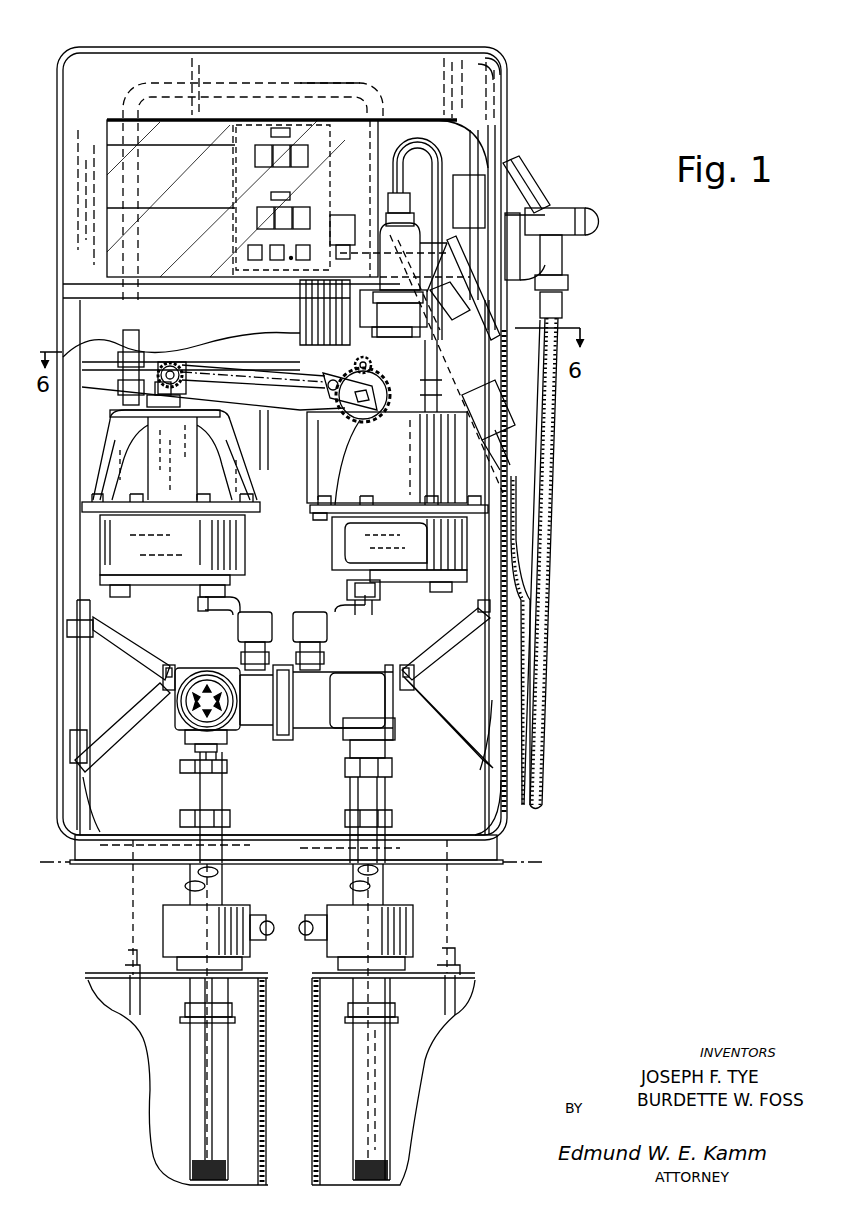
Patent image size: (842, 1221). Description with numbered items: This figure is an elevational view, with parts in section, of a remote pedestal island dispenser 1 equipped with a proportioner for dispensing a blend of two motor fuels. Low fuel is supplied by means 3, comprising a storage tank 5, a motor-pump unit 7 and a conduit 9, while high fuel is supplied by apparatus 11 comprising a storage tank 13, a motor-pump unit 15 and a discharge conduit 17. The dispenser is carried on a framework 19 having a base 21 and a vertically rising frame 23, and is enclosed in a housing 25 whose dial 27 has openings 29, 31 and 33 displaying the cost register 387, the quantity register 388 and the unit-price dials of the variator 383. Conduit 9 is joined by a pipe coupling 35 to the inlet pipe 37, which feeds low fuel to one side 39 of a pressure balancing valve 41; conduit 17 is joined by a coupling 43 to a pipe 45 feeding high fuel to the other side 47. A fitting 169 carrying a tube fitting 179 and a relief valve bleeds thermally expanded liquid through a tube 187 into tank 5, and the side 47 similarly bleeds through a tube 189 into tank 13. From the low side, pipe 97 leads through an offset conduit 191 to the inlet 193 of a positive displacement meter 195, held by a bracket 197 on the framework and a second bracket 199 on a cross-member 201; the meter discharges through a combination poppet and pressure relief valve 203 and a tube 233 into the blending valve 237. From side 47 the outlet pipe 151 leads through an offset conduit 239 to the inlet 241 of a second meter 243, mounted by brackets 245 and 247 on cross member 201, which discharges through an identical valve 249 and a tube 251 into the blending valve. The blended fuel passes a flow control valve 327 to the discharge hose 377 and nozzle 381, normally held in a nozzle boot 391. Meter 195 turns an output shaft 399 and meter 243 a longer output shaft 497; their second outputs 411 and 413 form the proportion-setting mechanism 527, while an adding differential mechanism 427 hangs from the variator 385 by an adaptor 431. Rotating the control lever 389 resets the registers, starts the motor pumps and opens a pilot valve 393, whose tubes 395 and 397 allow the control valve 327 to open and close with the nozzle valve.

The island dispenser 1 is at (510, 66).
The low fuel supply means 3 is at (82, 968).
The storage tank 5 is at (165, 1150).
The motor-pump unit 7 is at (196, 1085).
The conduit 9 is at (228, 890).
The high fuel supply apparatus 11 is at (482, 1013).
The storage tank 13 is at (405, 1122).
The motor-pump unit 15 is at (370, 1062).
The discharge conduit 17 is at (382, 888).
The framework 19 is at (504, 809).
The base 21 is at (512, 852).
The frame 23 is at (492, 772).
The housing 25 is at (336, 76).
The dial 27 is at (168, 169).
The opening 29 is at (308, 150).
The opening 31 is at (252, 218).
The opening 33 is at (246, 252).
The pipe coupling 35 is at (180, 768).
The inlet pipe 37 is at (212, 755).
The low fuel side of pressure balancing valve 39 is at (200, 672).
The pressure balancing valve 41 is at (281, 745).
The coupling 43 is at (350, 787).
The pipe 45 is at (375, 752).
The high fuel side of pressure balancing valve 47 is at (372, 676).
The pipe 97 is at (244, 650).
The outlet pipe 151 is at (325, 652).
The fitting 169 is at (184, 736).
The tube fitting 179 is at (194, 750).
The tube 187 is at (200, 780).
The tube 189 is at (398, 800).
The offset conduit 191 is at (205, 607).
The inlet 193 is at (214, 588).
The positive displacement meter 195 is at (232, 530).
The bracket 197 is at (121, 711).
The second bracket 199 is at (257, 492).
The cross-member 201 is at (492, 382).
The combination poppet and pressure relief valve 203 is at (120, 380).
The tube 233 is at (172, 82).
The blending or proportioning valve 237 is at (410, 229).
The offset conduit 239 is at (372, 608).
The inlet 241 is at (350, 584).
The second positive displacement liquid meter 243 is at (345, 549).
The bracket 245 is at (478, 516).
The bracket 247 is at (312, 468).
The combination poppet and pressure relief valve 249 is at (428, 396).
The tube 251 is at (443, 153).
The flow control valve 327 is at (488, 350).
The discharge hose 377 is at (540, 468).
The nozzle 381 is at (592, 219).
The variator 383 is at (292, 322).
The variator 385 is at (300, 333).
The register 387 is at (270, 147).
The register 388 is at (268, 203).
The control lever 389 is at (518, 254).
The nozzle boot 391 is at (510, 153).
The pilot valve 393 is at (336, 212).
The tube 395 is at (558, 278).
The tube 397 is at (537, 303).
The output shaft 399 is at (175, 441).
The second output 411 is at (222, 394).
The second output 413 is at (338, 410).
The adding differential mechanism 427 is at (270, 412).
The adaptor 431 is at (268, 354).
The output shaft 497 is at (388, 398).
The proportion setting and controlling mechanism 527 is at (184, 354).